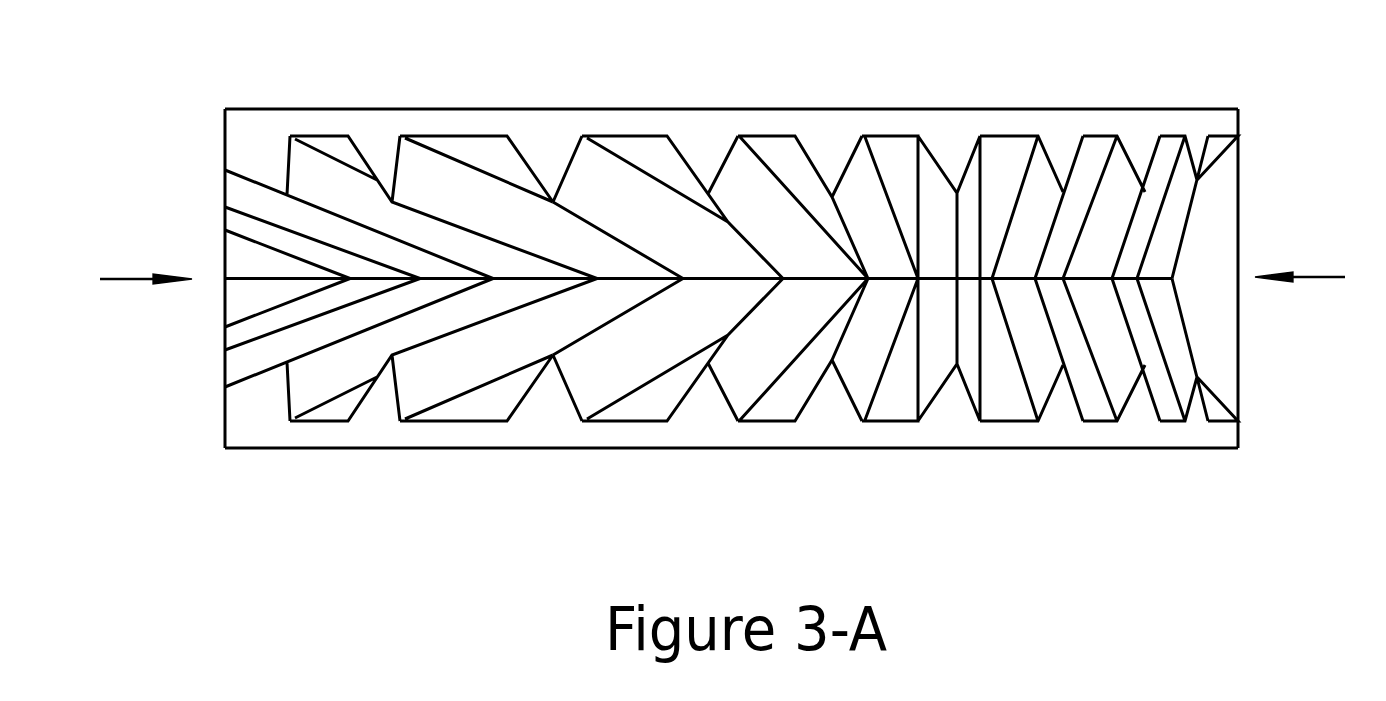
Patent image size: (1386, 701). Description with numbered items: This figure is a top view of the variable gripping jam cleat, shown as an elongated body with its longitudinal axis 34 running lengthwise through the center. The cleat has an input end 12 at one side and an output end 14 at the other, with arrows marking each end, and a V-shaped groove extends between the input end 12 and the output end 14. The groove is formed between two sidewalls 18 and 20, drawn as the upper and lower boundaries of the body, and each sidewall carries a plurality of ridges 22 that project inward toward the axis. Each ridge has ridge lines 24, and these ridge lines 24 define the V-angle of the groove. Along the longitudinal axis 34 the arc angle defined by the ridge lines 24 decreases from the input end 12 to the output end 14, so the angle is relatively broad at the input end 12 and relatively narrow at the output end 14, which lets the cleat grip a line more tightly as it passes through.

The input end 12 is at (1317, 280).
The output end 14 is at (127, 285).
The sidewall 18 is at (1053, 120).
The sidewall 20 is at (940, 430).
The ridges 22 is at (517, 152).
The ridge lines 24 is at (578, 220).
The longitudinal axis 34 is at (1090, 278).